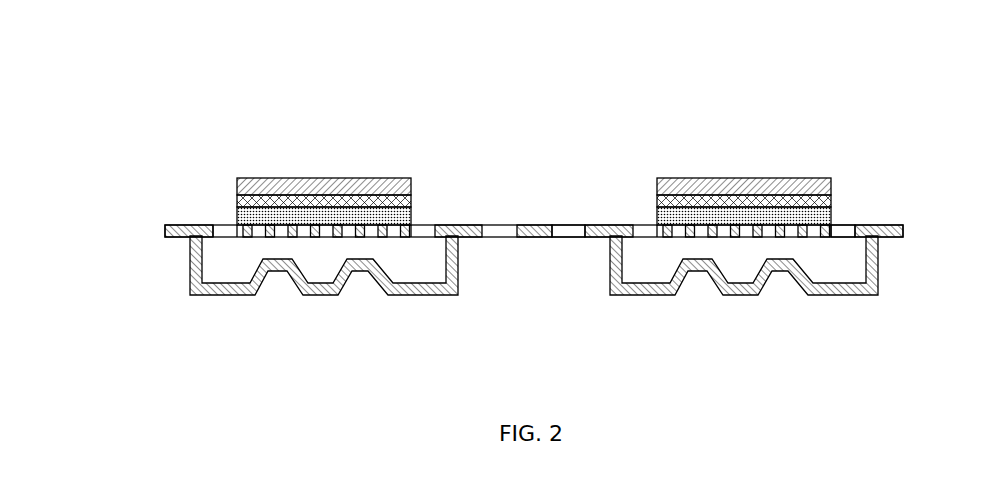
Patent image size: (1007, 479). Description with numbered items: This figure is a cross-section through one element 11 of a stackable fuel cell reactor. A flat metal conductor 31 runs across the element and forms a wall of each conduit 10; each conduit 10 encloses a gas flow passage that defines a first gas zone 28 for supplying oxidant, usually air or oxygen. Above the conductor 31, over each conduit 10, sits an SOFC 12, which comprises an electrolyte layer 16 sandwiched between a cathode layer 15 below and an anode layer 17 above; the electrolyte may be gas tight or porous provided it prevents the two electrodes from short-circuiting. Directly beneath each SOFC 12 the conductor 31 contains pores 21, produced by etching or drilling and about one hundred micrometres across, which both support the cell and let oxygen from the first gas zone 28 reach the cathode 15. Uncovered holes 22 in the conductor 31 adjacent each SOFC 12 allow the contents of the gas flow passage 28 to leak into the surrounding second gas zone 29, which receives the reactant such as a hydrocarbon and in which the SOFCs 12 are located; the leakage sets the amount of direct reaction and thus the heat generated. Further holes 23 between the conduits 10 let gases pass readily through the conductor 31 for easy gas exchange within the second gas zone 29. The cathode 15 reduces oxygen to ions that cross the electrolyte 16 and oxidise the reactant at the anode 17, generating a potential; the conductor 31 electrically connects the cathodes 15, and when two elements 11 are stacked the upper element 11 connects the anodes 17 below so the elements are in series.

The conduit 10 is at (190, 274).
The element 11 is at (232, 93).
The SOFC 12 is at (439, 184).
The cathode layer 15 is at (237, 217).
The electrolyte layer 16 is at (237, 200).
The anode layer 17 is at (237, 183).
The pores 21 is at (298, 230).
The uncovered holes 22 is at (838, 230).
The holes 23 is at (570, 230).
The first gas zone 28 is at (402, 271).
The second gas zone 29 is at (514, 174).
The conductor 31 is at (867, 232).